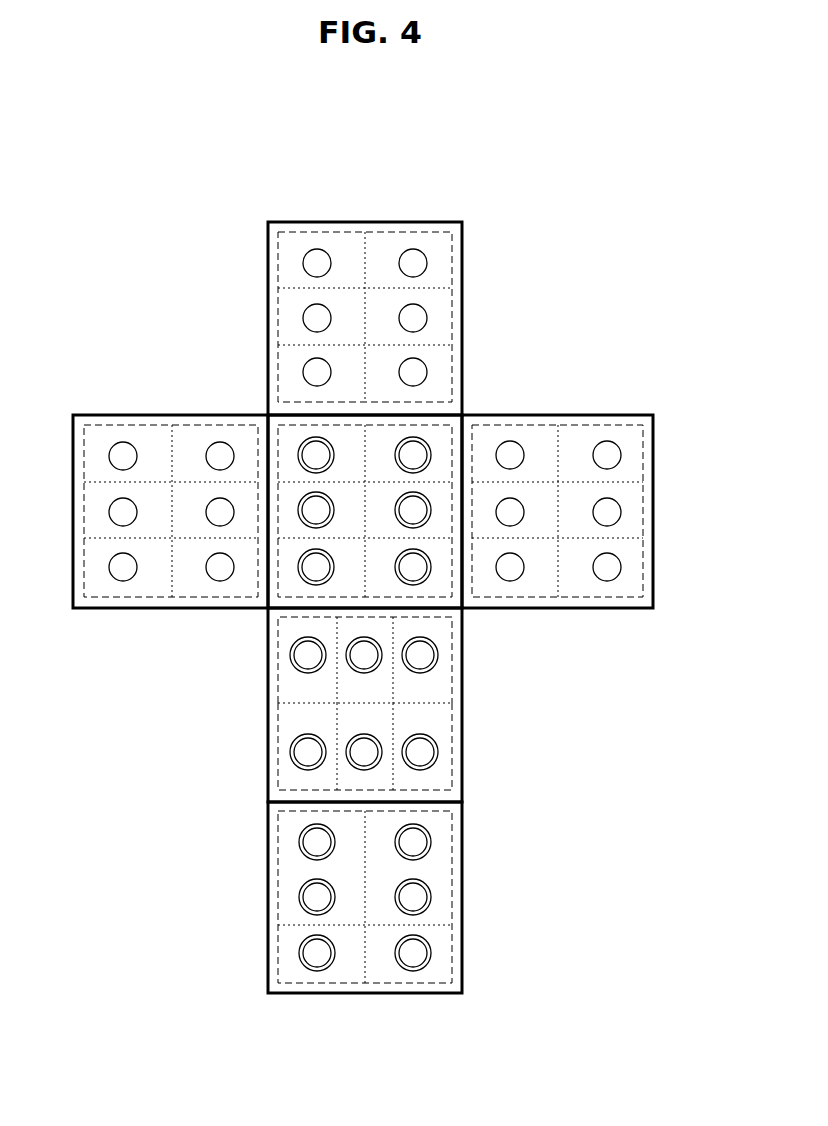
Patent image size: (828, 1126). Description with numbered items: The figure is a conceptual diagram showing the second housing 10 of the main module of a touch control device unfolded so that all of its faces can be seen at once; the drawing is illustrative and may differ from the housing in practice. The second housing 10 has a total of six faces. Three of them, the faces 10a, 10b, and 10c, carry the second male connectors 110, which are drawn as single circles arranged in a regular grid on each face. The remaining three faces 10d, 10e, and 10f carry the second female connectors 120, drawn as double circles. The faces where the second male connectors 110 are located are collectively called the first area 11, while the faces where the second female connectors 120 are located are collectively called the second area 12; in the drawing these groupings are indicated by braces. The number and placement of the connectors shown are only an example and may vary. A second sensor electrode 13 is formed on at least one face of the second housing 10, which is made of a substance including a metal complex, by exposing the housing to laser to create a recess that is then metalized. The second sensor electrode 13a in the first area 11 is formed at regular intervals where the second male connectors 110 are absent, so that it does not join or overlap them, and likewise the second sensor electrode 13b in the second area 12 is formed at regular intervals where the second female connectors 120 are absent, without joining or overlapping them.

The second housing 10 is at (238, 193).
The face 10a is at (435, 221).
The face 10b is at (95, 415).
The face 10c is at (617, 416).
The face 10d is at (268, 608).
The face 10e is at (272, 736).
The face 10f is at (268, 827).
The first area 11 is at (369, 374).
The second area 12 is at (155, 677).
The second sensor electrode 13 is at (590, 677).
The second sensor electrode 13a is at (558, 576).
The second sensor electrode 13b is at (432, 593).
The second male connector 110 is at (414, 372).
The second female connector 120 is at (440, 752).